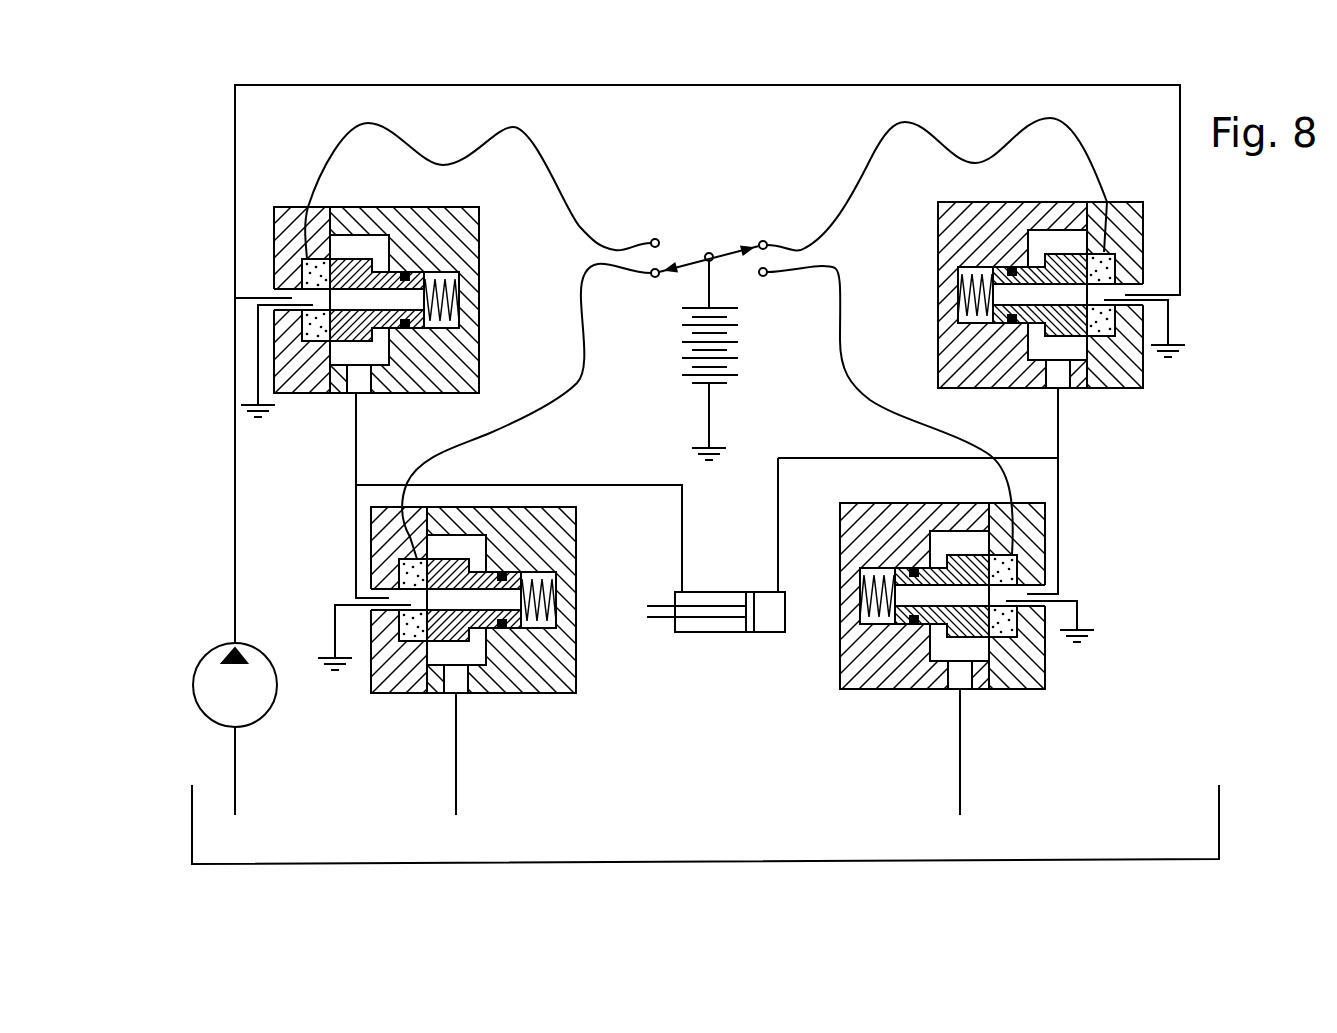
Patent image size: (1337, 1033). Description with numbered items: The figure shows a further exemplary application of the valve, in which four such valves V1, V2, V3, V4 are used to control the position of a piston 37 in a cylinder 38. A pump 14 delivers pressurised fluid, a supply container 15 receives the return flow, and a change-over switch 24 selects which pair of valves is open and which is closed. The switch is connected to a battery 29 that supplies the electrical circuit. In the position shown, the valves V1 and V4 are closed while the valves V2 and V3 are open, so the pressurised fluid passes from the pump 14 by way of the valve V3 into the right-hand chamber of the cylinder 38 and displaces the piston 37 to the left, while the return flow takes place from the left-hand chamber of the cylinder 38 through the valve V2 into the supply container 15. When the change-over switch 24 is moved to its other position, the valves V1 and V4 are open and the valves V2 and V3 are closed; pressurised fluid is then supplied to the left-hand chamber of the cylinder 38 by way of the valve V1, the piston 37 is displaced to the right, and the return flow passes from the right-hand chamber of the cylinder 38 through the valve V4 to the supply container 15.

The valve V1 is at (462, 197).
The valve V2 is at (583, 550).
The valve V3 is at (1015, 193).
The valve V4 is at (828, 667).
The change-over switch 24 is at (706, 238).
The battery 29 is at (731, 360).
The piston 37 is at (748, 592).
The cylinder 38 is at (713, 635).
The pump 14 is at (258, 717).
The supply container 15 is at (1220, 822).